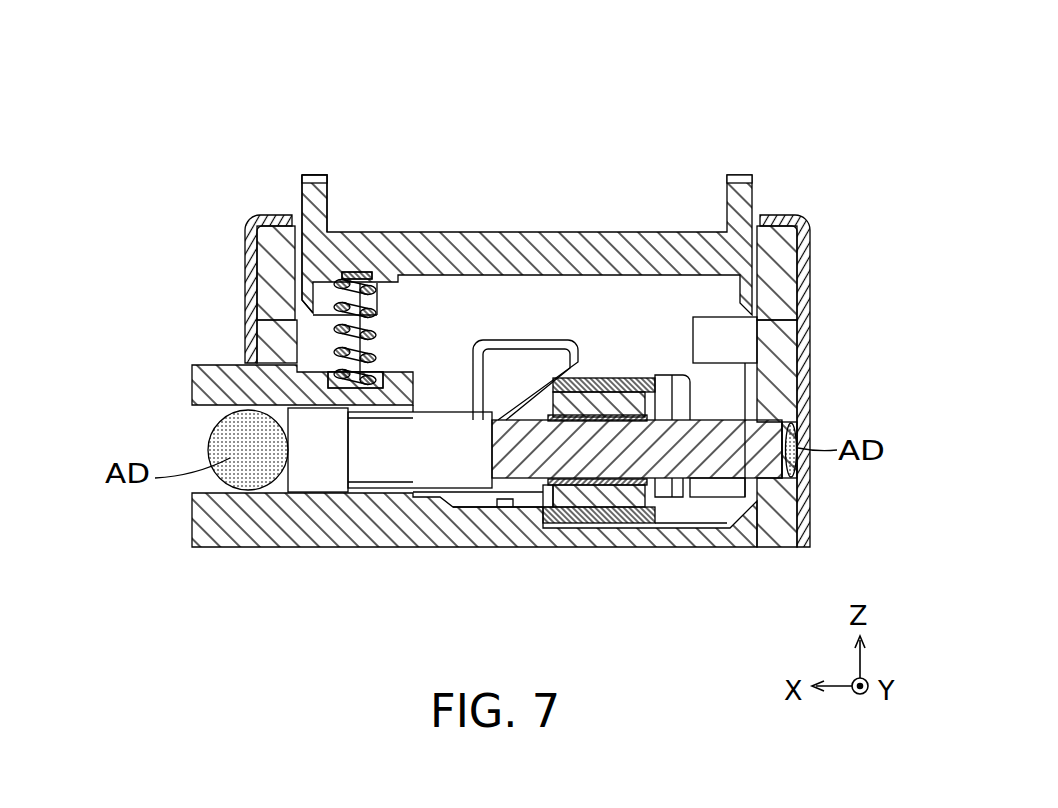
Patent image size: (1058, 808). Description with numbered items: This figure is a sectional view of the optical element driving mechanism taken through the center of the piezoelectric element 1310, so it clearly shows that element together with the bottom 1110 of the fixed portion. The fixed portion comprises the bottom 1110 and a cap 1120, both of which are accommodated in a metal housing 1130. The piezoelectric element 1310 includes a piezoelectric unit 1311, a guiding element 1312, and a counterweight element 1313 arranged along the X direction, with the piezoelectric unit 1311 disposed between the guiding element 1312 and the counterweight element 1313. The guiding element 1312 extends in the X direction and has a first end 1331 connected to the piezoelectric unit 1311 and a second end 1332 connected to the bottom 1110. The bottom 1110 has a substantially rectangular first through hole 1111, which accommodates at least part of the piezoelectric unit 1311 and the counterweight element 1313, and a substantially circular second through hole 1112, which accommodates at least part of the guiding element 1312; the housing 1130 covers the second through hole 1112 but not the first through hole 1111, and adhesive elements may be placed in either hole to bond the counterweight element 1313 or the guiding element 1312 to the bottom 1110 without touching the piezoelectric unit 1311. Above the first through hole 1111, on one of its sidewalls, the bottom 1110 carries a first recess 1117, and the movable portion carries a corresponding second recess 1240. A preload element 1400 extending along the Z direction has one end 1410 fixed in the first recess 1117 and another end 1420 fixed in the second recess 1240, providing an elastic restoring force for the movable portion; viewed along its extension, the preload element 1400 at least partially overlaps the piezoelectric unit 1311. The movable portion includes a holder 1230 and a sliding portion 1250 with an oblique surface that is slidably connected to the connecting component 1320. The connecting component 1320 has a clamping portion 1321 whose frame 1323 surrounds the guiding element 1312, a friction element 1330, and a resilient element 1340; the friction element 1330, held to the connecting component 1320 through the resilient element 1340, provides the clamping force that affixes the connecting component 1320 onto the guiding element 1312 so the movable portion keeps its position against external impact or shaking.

The bottom 1110 is at (240, 547).
The first through hole 1111 is at (200, 428).
The second through hole 1112 is at (795, 418).
The first recess 1117 is at (393, 380).
The cap 1120 is at (268, 245).
The housing 1130 is at (805, 300).
The holder 1230 is at (316, 198).
The second recess 1240 is at (357, 272).
The sliding portion 1250 is at (523, 357).
The piezoelectric element 1310 is at (610, 322).
The piezoelectric unit 1311 is at (398, 470).
The guiding element 1312 is at (532, 470).
The counterweight element 1313 is at (318, 470).
The connecting component 1320 is at (670, 390).
The clamping portion 1321 is at (578, 523).
The frame 1323 is at (590, 543).
The friction element 1330 is at (635, 523).
The first end 1331 is at (493, 452).
The second end 1332 is at (780, 452).
The resilient element 1340 is at (620, 522).
The preload element 1400 is at (277, 281).
The one end 1410 is at (360, 375).
The another end 1420 is at (357, 288).